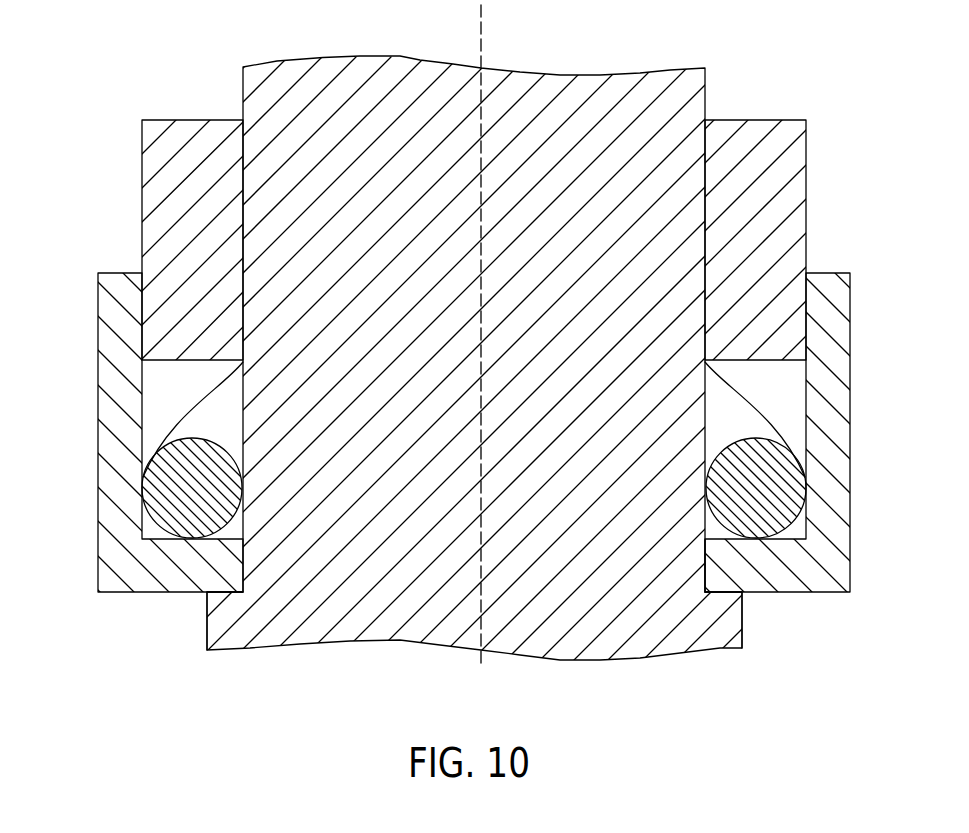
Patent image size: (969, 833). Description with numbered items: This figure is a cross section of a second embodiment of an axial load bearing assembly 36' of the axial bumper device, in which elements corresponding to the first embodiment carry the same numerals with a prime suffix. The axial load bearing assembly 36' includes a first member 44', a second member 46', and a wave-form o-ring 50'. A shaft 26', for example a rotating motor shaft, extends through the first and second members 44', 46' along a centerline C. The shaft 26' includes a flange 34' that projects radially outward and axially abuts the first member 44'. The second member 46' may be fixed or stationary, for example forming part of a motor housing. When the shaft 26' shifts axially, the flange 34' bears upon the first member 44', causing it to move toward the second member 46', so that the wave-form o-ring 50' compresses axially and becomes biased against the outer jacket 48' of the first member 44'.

The shaft 26' is at (474, 336).
The centerline C is at (486, 52).
The second member 46' is at (505, 240).
The outer jacket 48' is at (442, 432).
The wave-form o-ring 50' is at (517, 488).
The flange 34' is at (768, 640).
The first member 44' is at (686, 625).
The axial load bearing assembly 36' is at (189, 667).